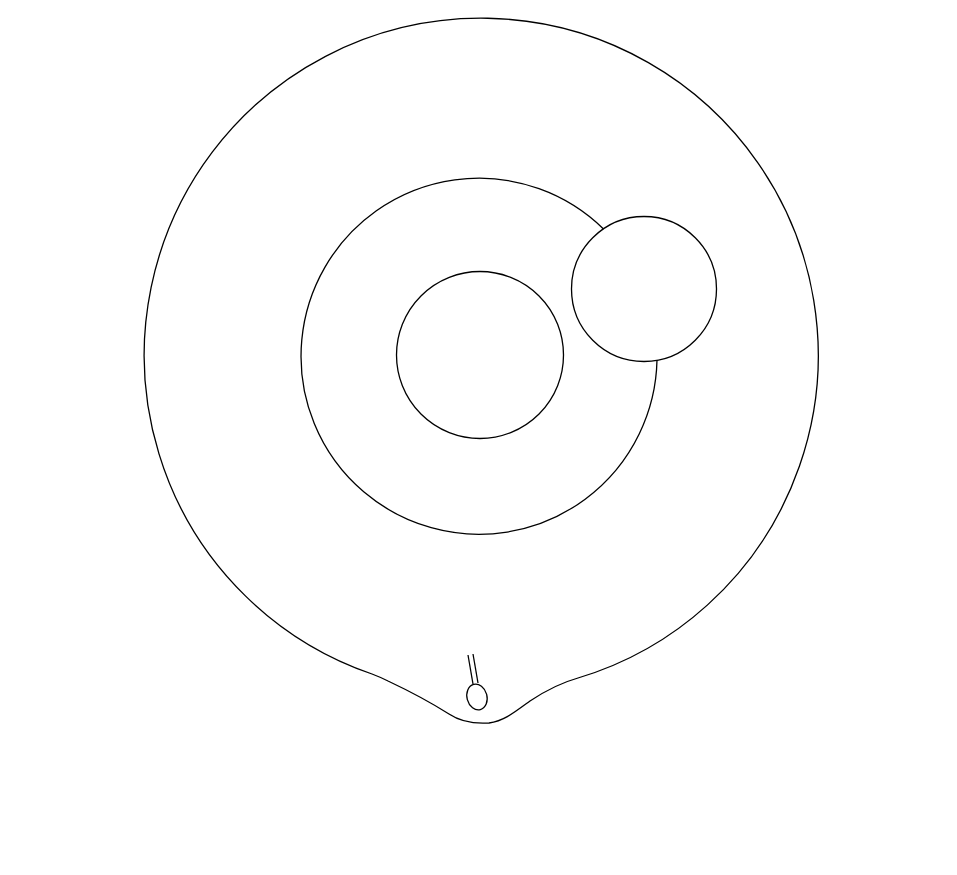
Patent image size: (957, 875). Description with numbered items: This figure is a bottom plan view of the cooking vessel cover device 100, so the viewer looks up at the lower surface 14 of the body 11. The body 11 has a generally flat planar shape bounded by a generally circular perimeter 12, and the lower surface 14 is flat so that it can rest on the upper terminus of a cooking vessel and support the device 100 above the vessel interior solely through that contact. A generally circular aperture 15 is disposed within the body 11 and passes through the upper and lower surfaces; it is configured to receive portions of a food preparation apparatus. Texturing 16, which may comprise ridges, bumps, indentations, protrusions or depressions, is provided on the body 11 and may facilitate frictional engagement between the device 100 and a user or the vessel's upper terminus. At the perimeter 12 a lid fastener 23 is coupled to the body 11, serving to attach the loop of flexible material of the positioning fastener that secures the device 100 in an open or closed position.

The cooking vessel cover device 100 is at (97, 83).
The body 11 is at (280, 468).
The perimeter 12 is at (707, 582).
The lower surface 14 is at (230, 227).
The aperture 15 is at (682, 268).
The texturing 16 is at (457, 434).
The lid fastener 23 is at (467, 688).